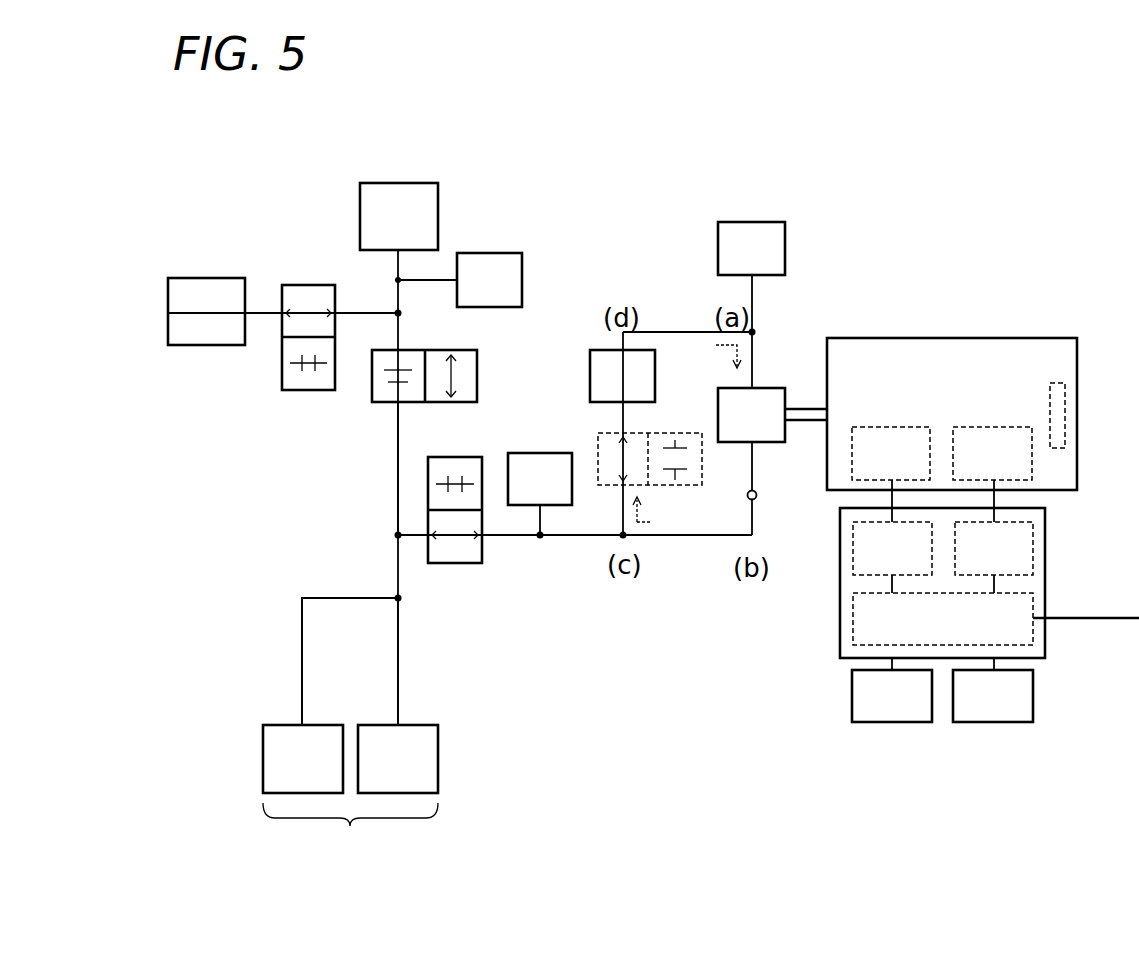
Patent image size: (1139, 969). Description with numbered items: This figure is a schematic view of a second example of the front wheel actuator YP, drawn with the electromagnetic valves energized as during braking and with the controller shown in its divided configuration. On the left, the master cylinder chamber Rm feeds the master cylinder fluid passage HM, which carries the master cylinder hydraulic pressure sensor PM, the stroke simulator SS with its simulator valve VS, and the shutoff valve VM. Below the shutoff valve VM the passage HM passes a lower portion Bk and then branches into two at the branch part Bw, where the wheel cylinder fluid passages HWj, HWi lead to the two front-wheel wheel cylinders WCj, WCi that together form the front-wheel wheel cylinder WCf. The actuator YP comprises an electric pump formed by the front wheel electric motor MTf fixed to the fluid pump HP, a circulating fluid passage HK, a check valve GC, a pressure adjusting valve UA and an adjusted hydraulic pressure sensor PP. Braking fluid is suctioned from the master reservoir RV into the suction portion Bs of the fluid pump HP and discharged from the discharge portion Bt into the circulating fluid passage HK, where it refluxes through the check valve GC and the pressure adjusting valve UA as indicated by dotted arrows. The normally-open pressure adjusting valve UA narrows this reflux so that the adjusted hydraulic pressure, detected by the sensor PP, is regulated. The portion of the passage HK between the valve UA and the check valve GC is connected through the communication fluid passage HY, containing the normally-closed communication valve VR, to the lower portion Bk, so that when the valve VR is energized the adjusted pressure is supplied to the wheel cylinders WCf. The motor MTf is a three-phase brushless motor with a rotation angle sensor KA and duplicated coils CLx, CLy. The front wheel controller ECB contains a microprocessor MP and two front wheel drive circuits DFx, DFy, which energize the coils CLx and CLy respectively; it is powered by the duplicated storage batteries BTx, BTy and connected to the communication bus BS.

The stroke simulator SS is at (206, 311).
The simulator valve VS is at (305, 268).
The master cylinder chamber Rm is at (399, 216).
The master cylinder hydraulic pressure sensor PM is at (460, 280).
The shutoff valve VM is at (466, 350).
The master cylinder fluid passage HM is at (398, 448).
The communication valve VR is at (463, 440).
The adjusted hydraulic pressure sensor PP is at (540, 494).
The communication fluid passage HY is at (535, 538).
The lower portion of shutoff valve Bk is at (398, 536).
The branch part Bw is at (400, 600).
The wheel cylinder fluid passage HWj is at (302, 680).
The wheel cylinder fluid passage HWi is at (398, 680).
The front-wheel wheel cylinder WCj is at (303, 759).
The front-wheel wheel cylinder WCi is at (398, 759).
The front-wheel wheel cylinder WCf is at (350, 836).
The master reservoir RV is at (751, 305).
The pressure adjusting valve UA is at (622, 435).
The circulating fluid passage HK is at (709, 326).
The suction portion Bs is at (757, 388).
The fluid pump HP is at (772, 461).
The discharge portion Bt is at (757, 444).
The check valve GC is at (757, 498).
The front wheel actuator YP is at (825, 224).
The front wheel electric motor MTf is at (918, 338).
The rotation angle sensor KA is at (1056, 383).
The one-side front wheel motor coil CLx is at (891, 474).
The other-side front wheel motor coil CLy is at (992, 474).
The front wheel controller ECB is at (838, 606).
The one-side front wheel drive circuit DFx is at (892, 557).
The other-side front wheel drive circuit DFy is at (994, 557).
The microprocessor MP is at (943, 619).
The one-side storage battery BTx is at (892, 690).
The other-side storage battery BTy is at (993, 690).
The communication bus BS is at (1086, 604).